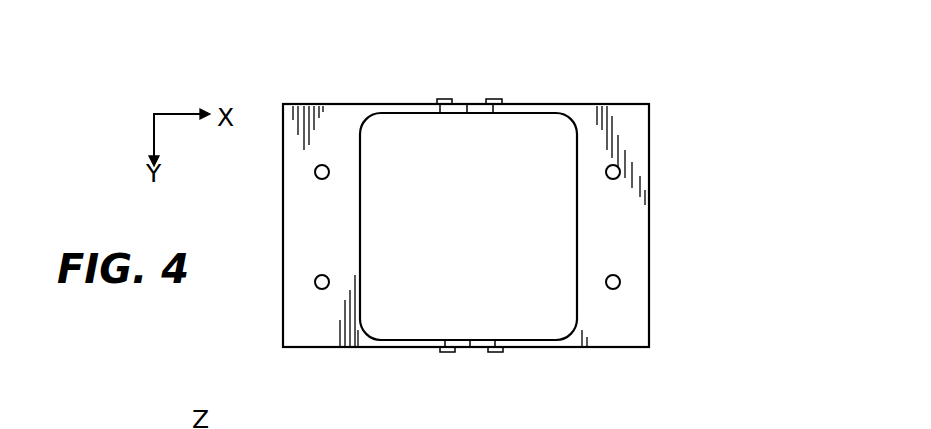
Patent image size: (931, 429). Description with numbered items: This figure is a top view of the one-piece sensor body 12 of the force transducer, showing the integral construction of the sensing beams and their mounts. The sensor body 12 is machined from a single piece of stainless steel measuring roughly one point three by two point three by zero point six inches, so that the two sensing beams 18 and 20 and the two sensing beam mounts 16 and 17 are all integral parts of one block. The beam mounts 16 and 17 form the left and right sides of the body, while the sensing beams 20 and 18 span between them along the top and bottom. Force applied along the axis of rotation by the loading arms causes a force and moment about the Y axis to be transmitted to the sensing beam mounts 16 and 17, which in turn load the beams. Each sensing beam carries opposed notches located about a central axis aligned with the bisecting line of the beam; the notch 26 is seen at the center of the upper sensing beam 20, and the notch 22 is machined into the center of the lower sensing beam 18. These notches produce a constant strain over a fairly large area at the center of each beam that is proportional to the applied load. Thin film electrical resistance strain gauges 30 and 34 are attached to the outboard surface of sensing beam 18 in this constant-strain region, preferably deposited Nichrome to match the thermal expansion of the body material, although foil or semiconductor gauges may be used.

The sensor body 12 is at (597, 96).
The sensing beam mount 16 is at (323, 251).
The sensing beam mount 17 is at (621, 241).
The sensing beam 18 is at (410, 342).
The sensing beam 20 is at (415, 104).
The notch 22 is at (482, 340).
The notch 26 is at (453, 113).
The electrical resistance strain gauge 30 is at (447, 352).
The electrical resistance strain gauge 34 is at (496, 352).